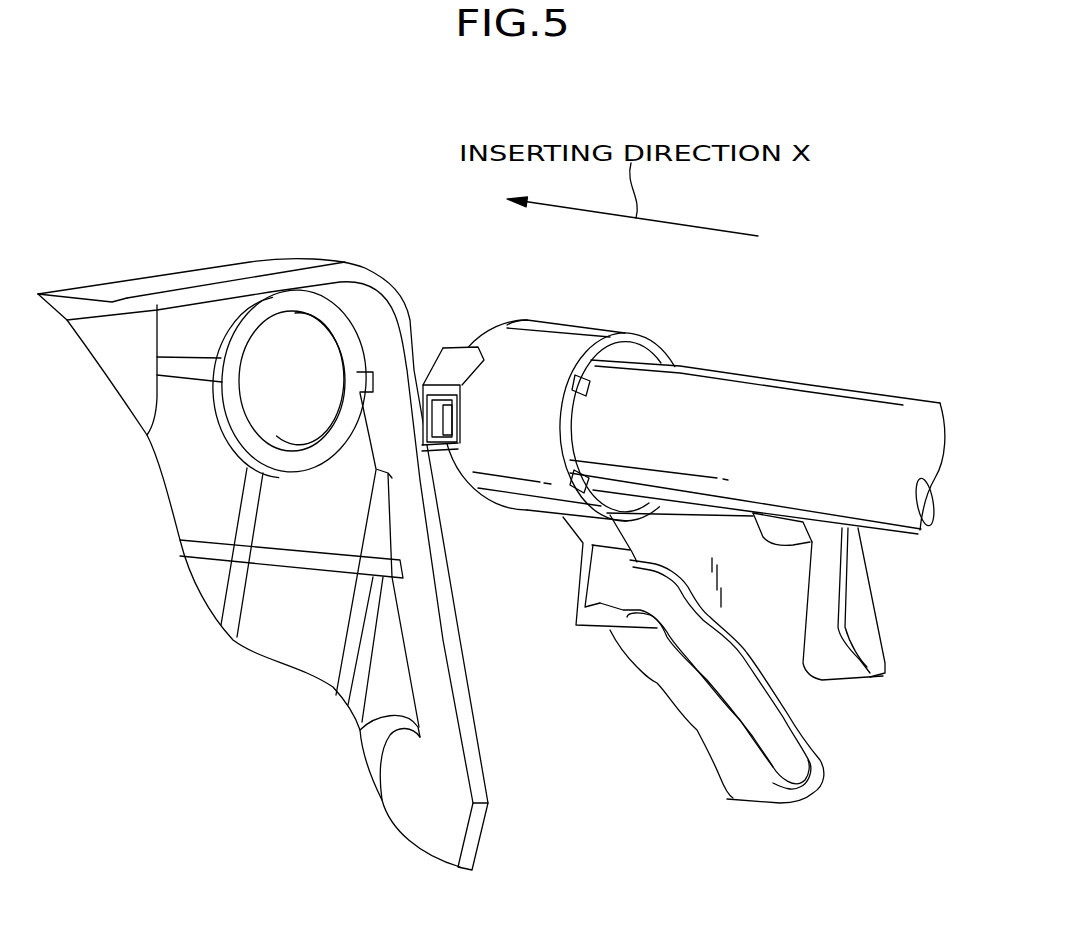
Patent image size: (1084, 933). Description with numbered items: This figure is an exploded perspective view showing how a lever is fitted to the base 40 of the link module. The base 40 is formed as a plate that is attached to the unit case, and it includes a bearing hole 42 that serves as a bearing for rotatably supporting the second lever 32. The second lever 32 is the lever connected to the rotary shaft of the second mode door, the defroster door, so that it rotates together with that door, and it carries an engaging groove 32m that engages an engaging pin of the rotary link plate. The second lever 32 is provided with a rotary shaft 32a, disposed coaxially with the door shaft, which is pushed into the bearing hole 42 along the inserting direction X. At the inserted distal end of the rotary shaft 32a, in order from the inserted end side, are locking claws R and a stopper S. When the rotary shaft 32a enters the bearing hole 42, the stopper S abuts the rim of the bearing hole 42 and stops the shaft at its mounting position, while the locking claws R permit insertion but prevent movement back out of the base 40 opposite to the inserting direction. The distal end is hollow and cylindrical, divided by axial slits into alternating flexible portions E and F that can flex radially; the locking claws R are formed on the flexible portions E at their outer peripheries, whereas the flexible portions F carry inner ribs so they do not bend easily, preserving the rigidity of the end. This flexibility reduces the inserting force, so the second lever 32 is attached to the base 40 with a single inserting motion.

The base 40 is at (203, 255).
The bearing hole 42 is at (324, 326).
The second lever 32 is at (783, 665).
The rotary shaft 32a is at (807, 413).
The engaging groove 32m is at (745, 760).
The locking claw R is at (480, 345).
The stopper S is at (512, 323).
The flexible portion E is at (455, 425).
The flexible portion F is at (457, 372).